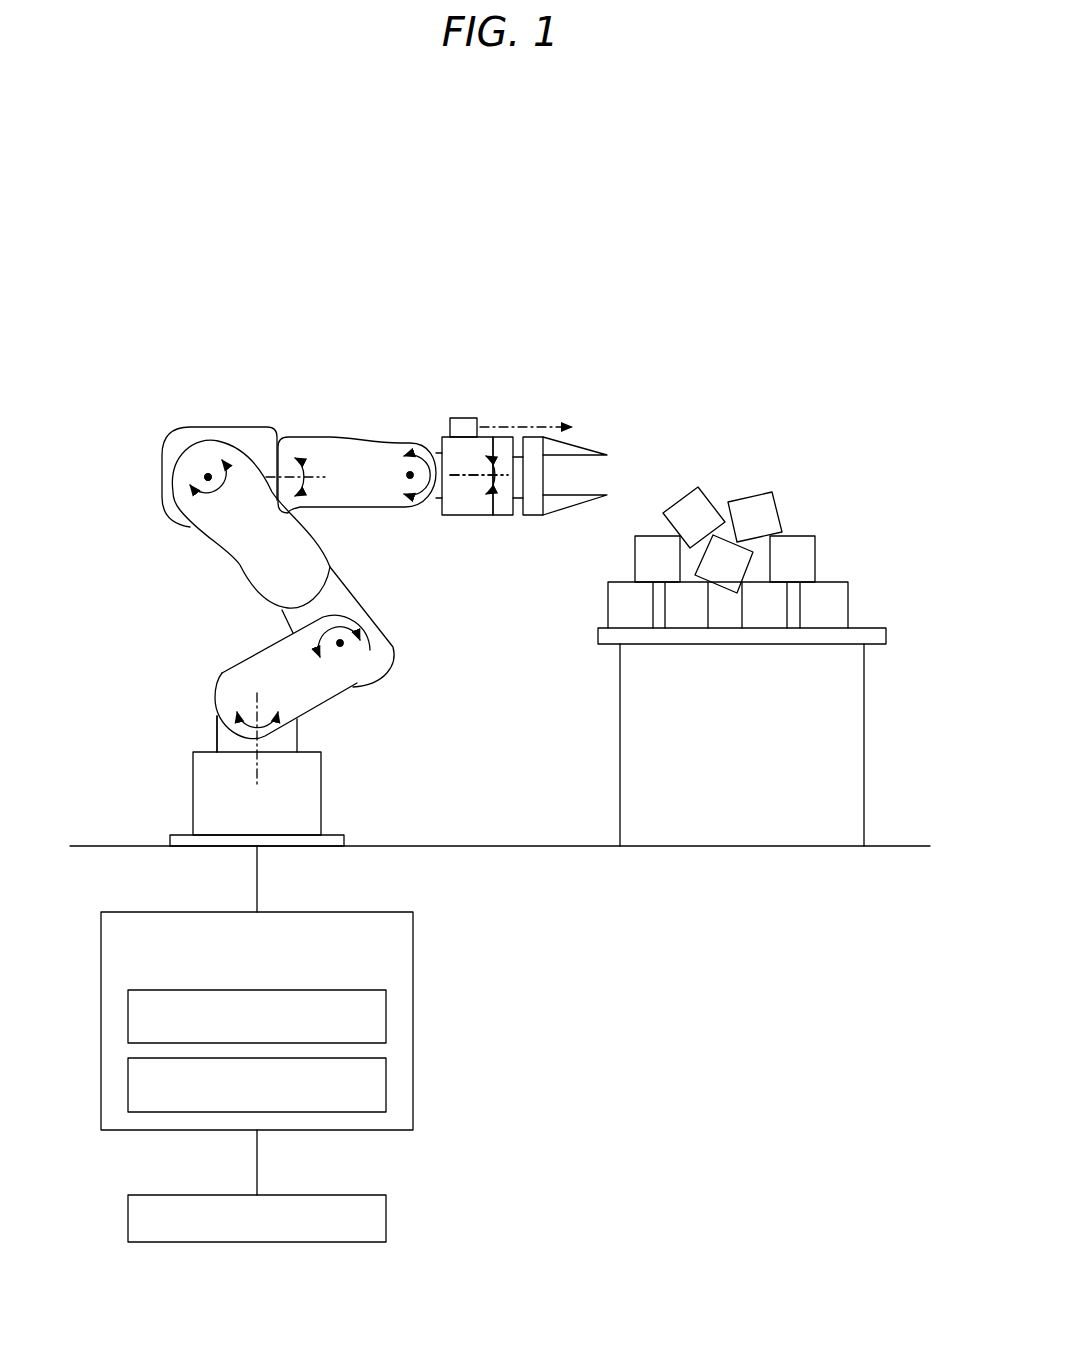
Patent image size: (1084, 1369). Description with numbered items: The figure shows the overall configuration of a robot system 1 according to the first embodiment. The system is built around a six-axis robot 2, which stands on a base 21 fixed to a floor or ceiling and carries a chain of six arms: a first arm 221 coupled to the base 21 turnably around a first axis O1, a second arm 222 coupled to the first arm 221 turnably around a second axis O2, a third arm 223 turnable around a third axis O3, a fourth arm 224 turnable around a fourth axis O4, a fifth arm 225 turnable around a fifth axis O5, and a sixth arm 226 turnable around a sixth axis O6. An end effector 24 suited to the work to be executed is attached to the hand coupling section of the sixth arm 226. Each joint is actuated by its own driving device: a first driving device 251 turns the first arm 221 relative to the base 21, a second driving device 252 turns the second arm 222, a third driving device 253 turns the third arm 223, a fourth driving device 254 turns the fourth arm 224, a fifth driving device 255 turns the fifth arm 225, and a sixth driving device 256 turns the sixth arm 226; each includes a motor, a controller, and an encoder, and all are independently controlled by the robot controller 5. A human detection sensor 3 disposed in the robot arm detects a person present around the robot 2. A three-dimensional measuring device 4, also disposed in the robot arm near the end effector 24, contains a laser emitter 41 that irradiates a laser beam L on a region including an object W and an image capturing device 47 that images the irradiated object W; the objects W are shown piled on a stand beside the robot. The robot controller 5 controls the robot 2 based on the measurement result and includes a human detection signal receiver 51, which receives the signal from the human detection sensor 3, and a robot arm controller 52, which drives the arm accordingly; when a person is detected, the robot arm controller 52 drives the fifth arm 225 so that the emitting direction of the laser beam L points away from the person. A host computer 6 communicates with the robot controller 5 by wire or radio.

The robot system 1 is at (699, 175).
The robot 2 is at (361, 409).
The base 21 is at (318, 805).
The first arm 221 is at (227, 695).
The second arm 222 is at (248, 573).
The third arm 223 is at (180, 445).
The fourth arm 224 is at (293, 443).
The fifth arm 225 is at (468, 505).
The sixth arm 226 is at (503, 505).
The end effector 24 is at (566, 500).
The first driving device 251 is at (228, 746).
The second driving device 252 is at (340, 660).
The third driving device 253 is at (200, 460).
The fourth driving device 254 is at (253, 488).
The fifth driving device 255 is at (405, 452).
The sixth driving device 256 is at (481, 462).
The human detection sensor 3 is at (501, 442).
The three-dimensional measuring device 4 is at (468, 414).
The laser emitter 41 is at (445, 381).
The image capturing device 47 is at (458, 425).
The robot controller 5 is at (413, 930).
The human detection signal receiver 51 is at (385, 1012).
The robot arm controller 52 is at (385, 1082).
The host computer 6 is at (385, 1218).
The object W is at (688, 500).
The laser beam L is at (541, 429).
The first axis O1 is at (257, 757).
The second axis O2 is at (345, 650).
The third axis O3 is at (205, 477).
The fourth axis O4 is at (268, 473).
The fifth axis O5 is at (409, 478).
The sixth axis O6 is at (452, 480).